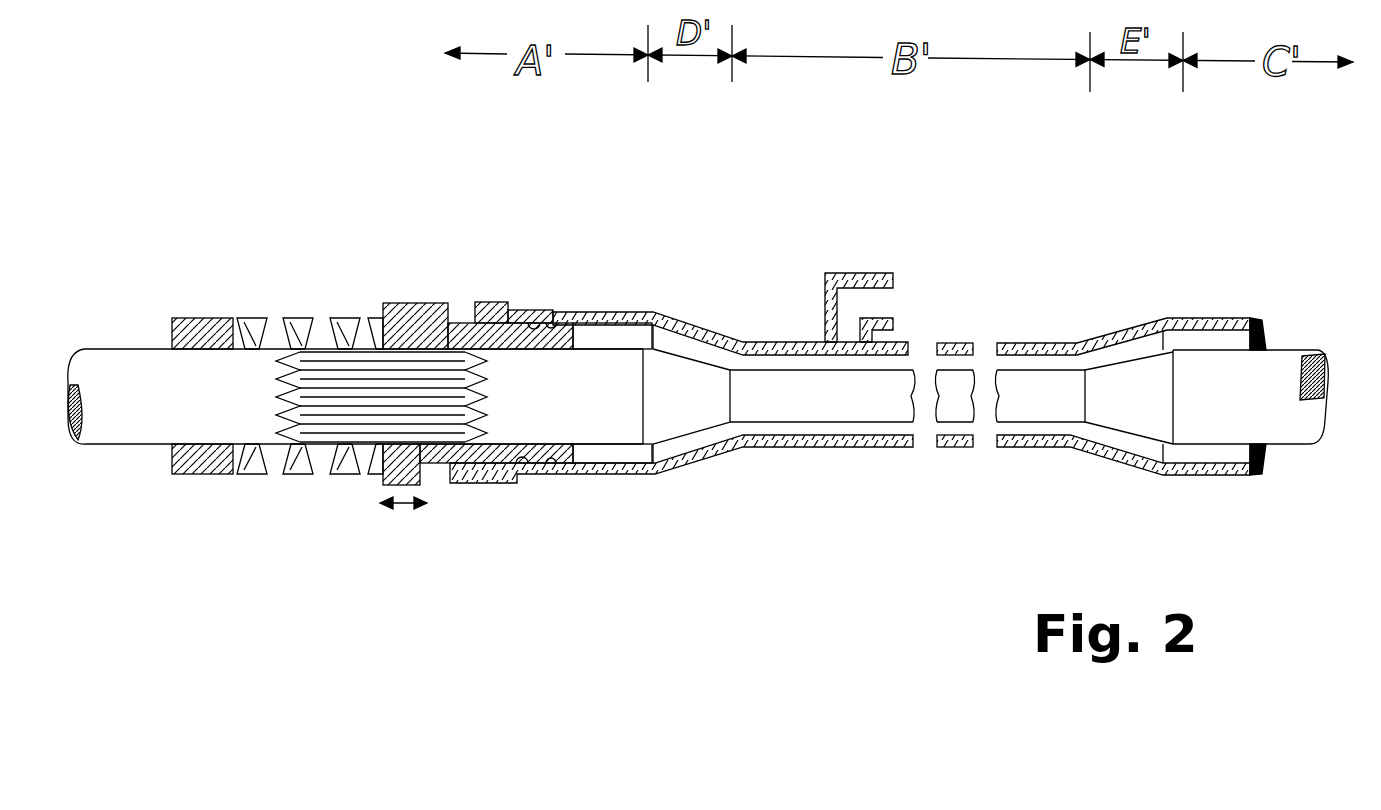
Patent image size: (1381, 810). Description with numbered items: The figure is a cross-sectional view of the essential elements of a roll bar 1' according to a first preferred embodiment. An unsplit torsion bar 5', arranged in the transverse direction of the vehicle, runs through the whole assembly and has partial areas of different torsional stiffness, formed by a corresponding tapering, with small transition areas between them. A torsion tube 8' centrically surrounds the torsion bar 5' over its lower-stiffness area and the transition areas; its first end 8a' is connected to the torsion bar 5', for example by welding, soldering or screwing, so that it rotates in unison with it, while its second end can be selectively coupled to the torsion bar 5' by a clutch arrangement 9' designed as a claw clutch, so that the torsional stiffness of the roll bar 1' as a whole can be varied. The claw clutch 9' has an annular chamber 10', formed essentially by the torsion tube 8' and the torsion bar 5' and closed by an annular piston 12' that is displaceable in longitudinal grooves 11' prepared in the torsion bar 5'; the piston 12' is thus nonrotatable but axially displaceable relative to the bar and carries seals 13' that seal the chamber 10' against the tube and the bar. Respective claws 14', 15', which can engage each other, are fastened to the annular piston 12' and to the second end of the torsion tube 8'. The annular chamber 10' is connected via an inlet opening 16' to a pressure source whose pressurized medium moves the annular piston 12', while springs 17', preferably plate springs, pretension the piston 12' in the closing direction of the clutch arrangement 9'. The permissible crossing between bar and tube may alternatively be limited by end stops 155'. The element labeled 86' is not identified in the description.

The unsplit torsion bar 5' is at (690, 341).
The springs 17' is at (277, 327).
The longitudinal grooves 11' is at (381, 343).
The clutch arrangement 9' is at (326, 555).
The claw 14' is at (405, 334).
The annular piston 12' is at (496, 311).
The claw 15' is at (498, 266).
The clamp 86' is at (540, 243).
The seals 13' is at (561, 338).
The annular chamber 10' is at (681, 355).
The roll bar 1' is at (951, 553).
The inlet opening 16' is at (920, 285).
The torsion tube 8' is at (1131, 446).
The first end 8a' is at (1308, 366).
The end stops 155' is at (457, 537).